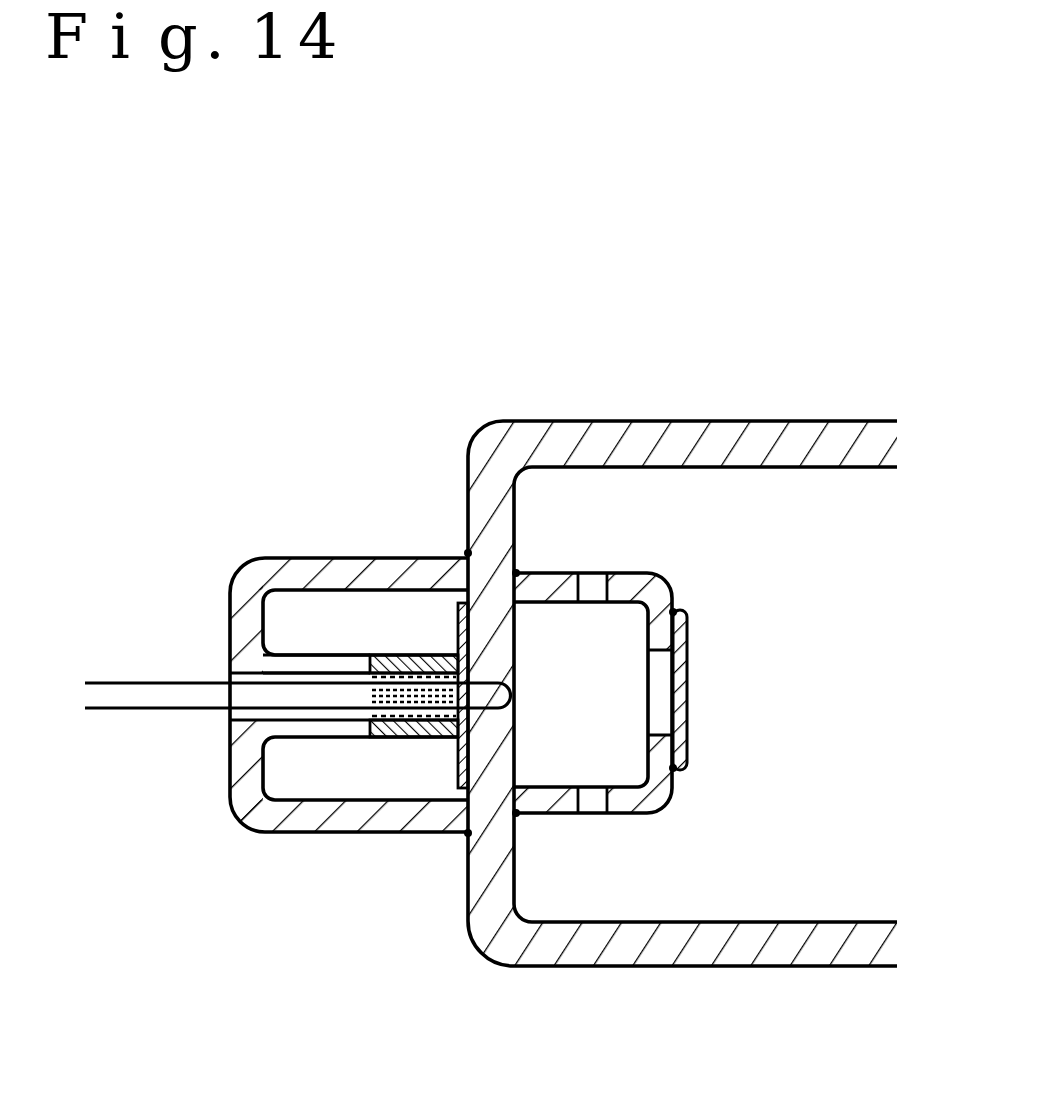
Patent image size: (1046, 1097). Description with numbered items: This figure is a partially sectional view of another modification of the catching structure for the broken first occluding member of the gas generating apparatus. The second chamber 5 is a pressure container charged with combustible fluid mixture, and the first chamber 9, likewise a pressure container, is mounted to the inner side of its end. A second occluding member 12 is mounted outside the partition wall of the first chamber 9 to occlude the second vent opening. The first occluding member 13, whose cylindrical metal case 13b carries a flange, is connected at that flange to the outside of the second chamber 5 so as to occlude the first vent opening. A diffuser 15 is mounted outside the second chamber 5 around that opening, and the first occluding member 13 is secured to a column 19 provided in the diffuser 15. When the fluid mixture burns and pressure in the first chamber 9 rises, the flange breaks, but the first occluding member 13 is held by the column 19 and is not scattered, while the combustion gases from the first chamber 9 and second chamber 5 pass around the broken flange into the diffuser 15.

The second chamber 5 is at (700, 966).
The first chamber 9 is at (650, 812).
The second occluding member 12 is at (687, 693).
The first occluding member 13 is at (372, 737).
The metal case 13b is at (416, 737).
The diffuser 15 is at (270, 833).
The column 19 is at (302, 652).